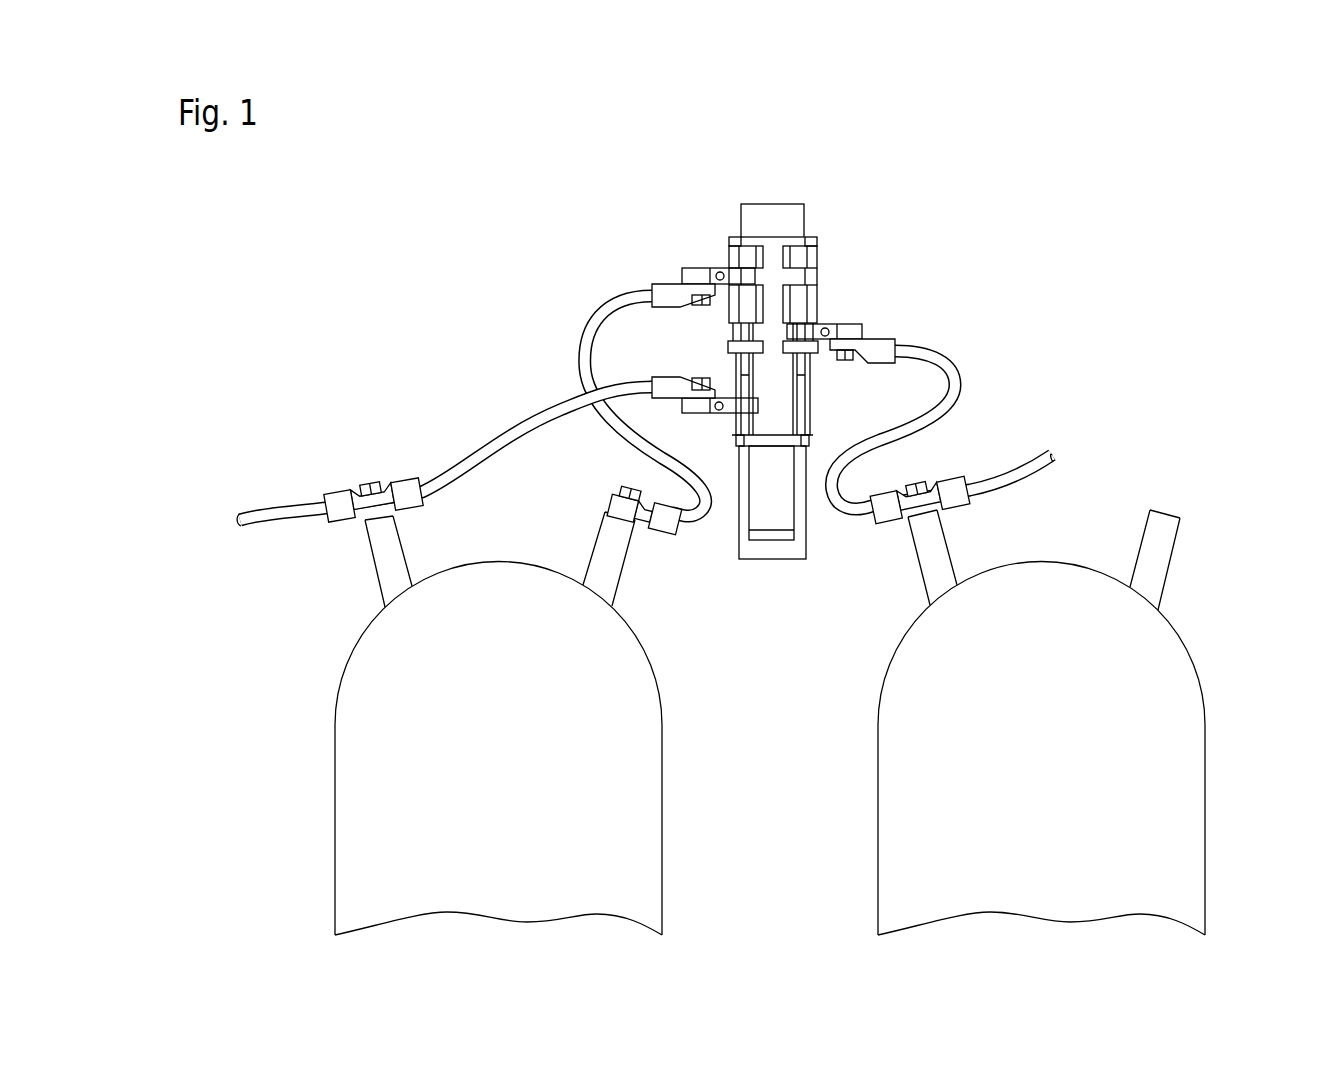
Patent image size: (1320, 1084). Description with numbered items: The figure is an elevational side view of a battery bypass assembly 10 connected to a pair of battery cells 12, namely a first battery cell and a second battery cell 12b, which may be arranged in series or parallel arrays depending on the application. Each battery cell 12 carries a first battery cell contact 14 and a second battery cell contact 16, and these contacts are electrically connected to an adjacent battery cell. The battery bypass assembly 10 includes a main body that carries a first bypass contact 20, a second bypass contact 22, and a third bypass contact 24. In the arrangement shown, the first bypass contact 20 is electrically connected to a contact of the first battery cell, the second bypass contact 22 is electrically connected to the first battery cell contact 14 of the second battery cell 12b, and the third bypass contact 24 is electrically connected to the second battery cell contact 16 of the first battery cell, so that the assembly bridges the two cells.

The battery bypass assembly 10 is at (852, 193).
The battery cell 12 is at (817, 749).
The second battery cell 12b is at (603, 703).
The first battery cell contact 14 is at (373, 562).
The second battery cell contact 16 is at (630, 550).
The first bypass contact 20 is at (700, 268).
The second bypass contact 22 is at (848, 324).
The third bypass contact 24 is at (677, 400).